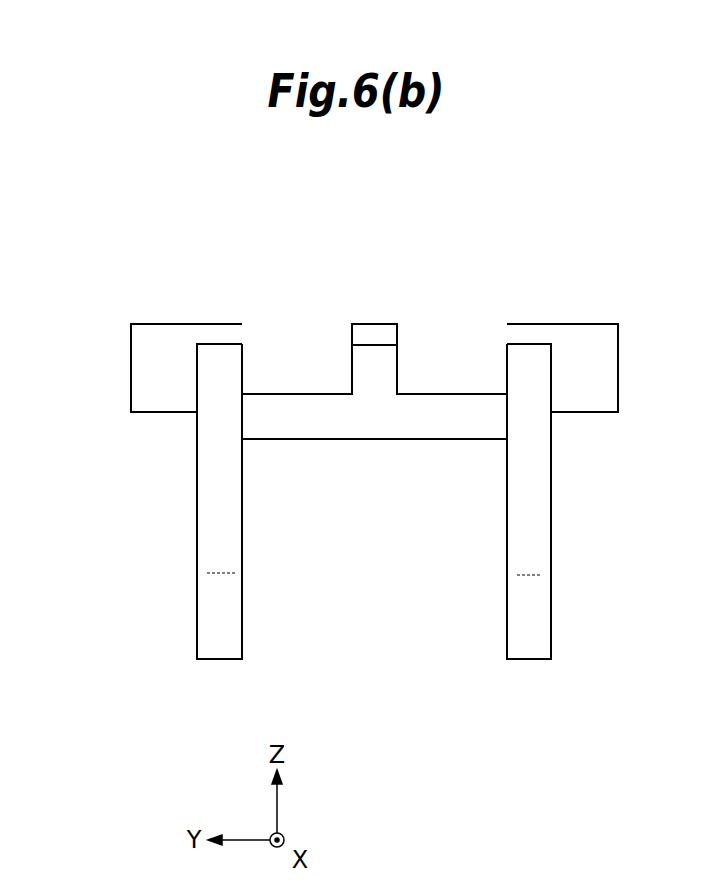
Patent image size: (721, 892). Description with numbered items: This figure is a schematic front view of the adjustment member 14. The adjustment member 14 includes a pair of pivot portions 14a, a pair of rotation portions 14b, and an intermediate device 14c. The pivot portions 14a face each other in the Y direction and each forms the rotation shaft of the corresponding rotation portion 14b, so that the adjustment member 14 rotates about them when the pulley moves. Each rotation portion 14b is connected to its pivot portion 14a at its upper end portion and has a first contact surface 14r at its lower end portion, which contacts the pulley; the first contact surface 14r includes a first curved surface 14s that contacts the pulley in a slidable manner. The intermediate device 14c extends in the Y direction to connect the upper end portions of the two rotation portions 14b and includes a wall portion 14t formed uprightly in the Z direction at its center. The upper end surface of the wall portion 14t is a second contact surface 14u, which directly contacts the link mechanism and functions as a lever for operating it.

The adjustment member 14 is at (273, 262).
The pivot portion 14a is at (131, 368).
The rotation portion 14b is at (197, 550).
The intermediate device 14c is at (338, 439).
The second contact surface 14u is at (375, 324).
The wall portion 14t is at (385, 370).
The first curved surface 14s is at (230, 620).
The first contact surface 14r is at (374, 574).